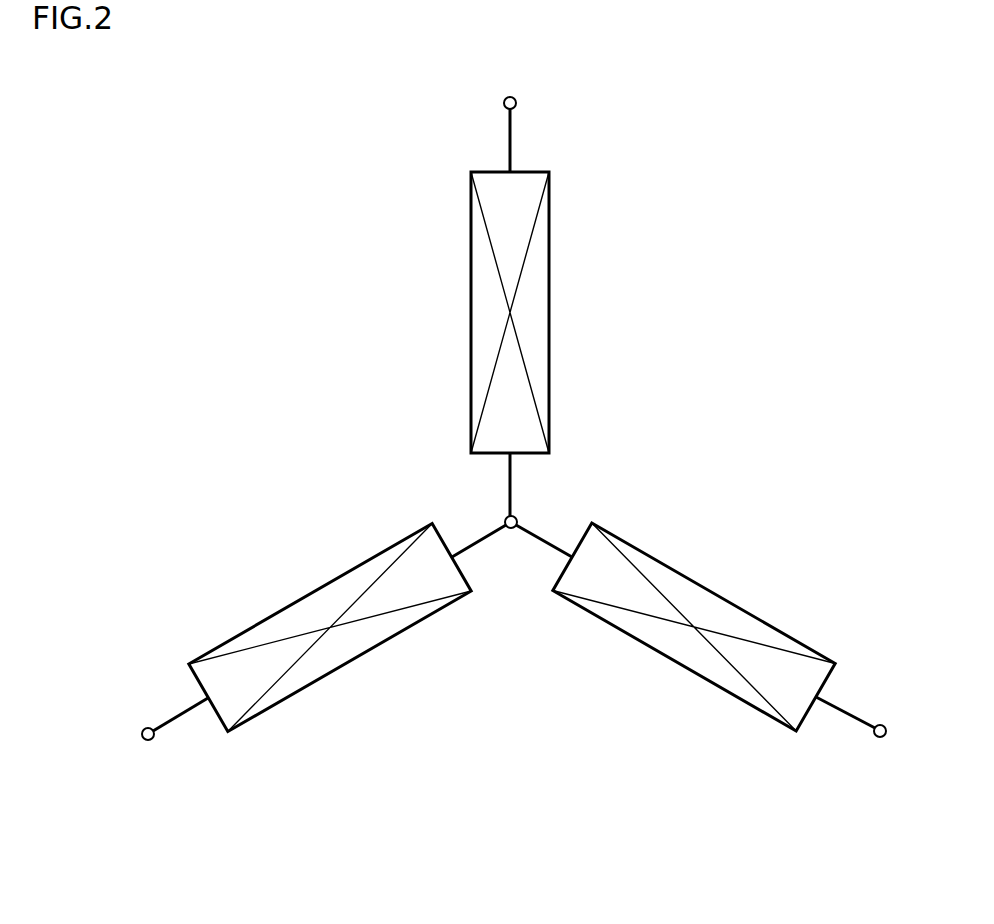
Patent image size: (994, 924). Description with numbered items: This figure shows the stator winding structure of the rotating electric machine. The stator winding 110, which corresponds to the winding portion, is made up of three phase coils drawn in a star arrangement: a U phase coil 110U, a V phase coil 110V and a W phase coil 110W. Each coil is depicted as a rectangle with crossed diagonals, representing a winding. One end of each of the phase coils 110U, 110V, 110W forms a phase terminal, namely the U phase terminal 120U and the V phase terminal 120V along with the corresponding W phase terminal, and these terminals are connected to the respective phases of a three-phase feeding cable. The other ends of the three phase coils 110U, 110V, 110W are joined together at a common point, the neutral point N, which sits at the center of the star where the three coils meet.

The stator winding 110 is at (364, 314).
The U phase coil 110U is at (550, 313).
The V phase coil 110V is at (348, 660).
The W phase coil 110W is at (676, 660).
The neutral point N is at (517, 518).
The U phase terminal 120U is at (510, 96).
The V phase terminal 120V is at (148, 740).